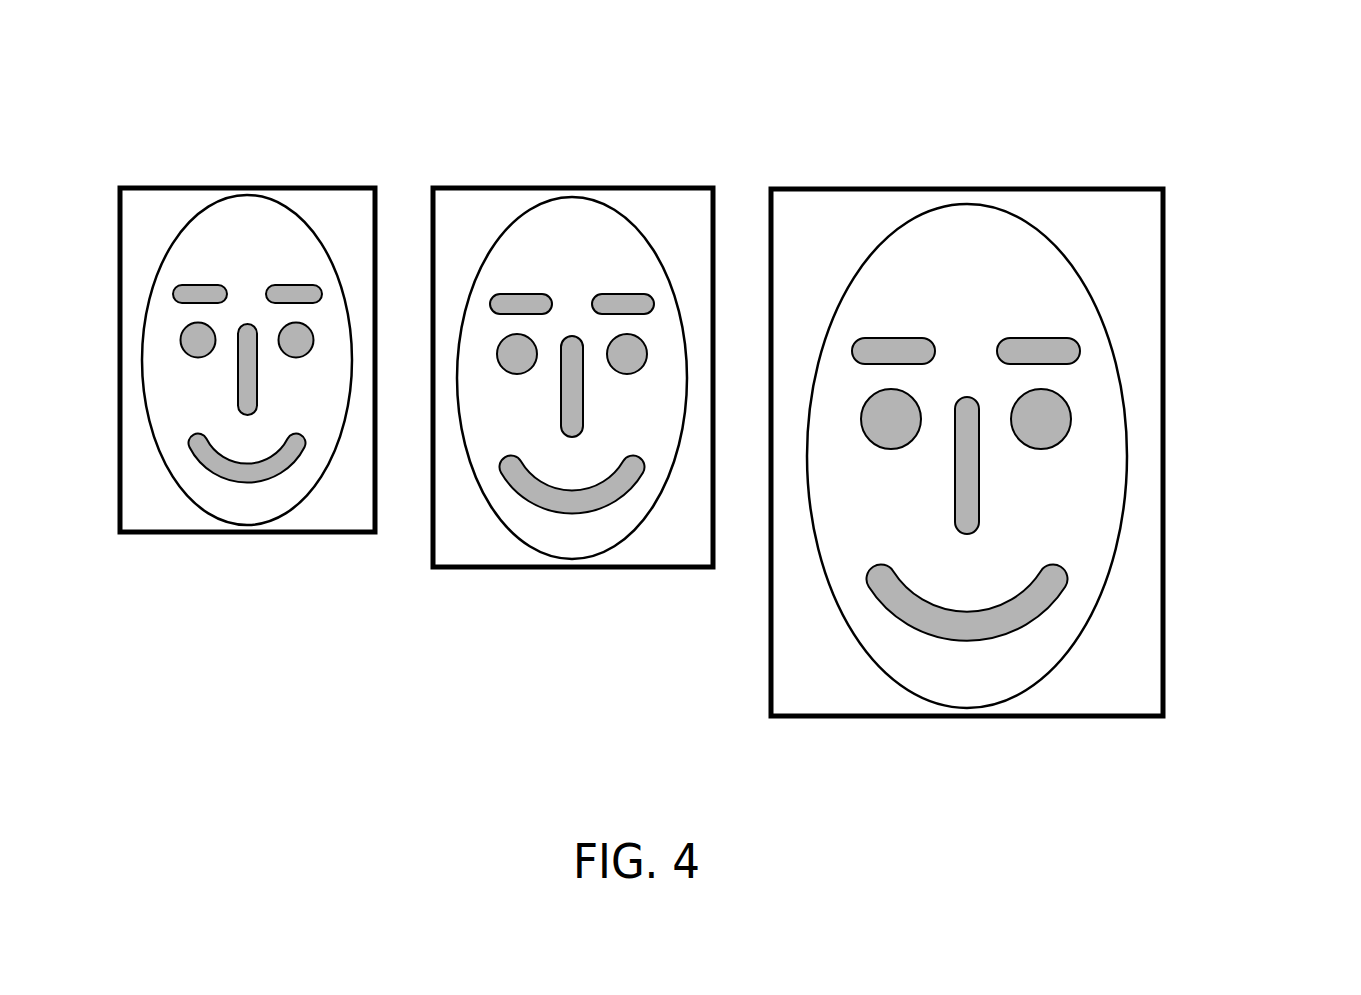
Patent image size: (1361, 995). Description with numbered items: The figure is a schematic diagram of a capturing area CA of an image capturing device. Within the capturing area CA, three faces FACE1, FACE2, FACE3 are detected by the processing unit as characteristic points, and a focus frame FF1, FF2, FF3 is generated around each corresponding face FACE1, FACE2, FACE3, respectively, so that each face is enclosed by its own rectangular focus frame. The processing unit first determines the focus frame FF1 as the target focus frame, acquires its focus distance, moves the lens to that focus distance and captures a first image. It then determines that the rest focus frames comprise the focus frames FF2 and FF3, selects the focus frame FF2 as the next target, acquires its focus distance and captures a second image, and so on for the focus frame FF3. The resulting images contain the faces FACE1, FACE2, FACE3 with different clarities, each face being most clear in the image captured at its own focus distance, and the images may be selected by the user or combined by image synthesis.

The capturing area CA is at (1215, 110).
The focus frame FF1 is at (311, 187).
The focus frame FF2 is at (648, 187).
The focus frame FF3 is at (1096, 188).
The face FACE1 is at (240, 525).
The face FACE2 is at (556, 560).
The face FACE3 is at (963, 712).